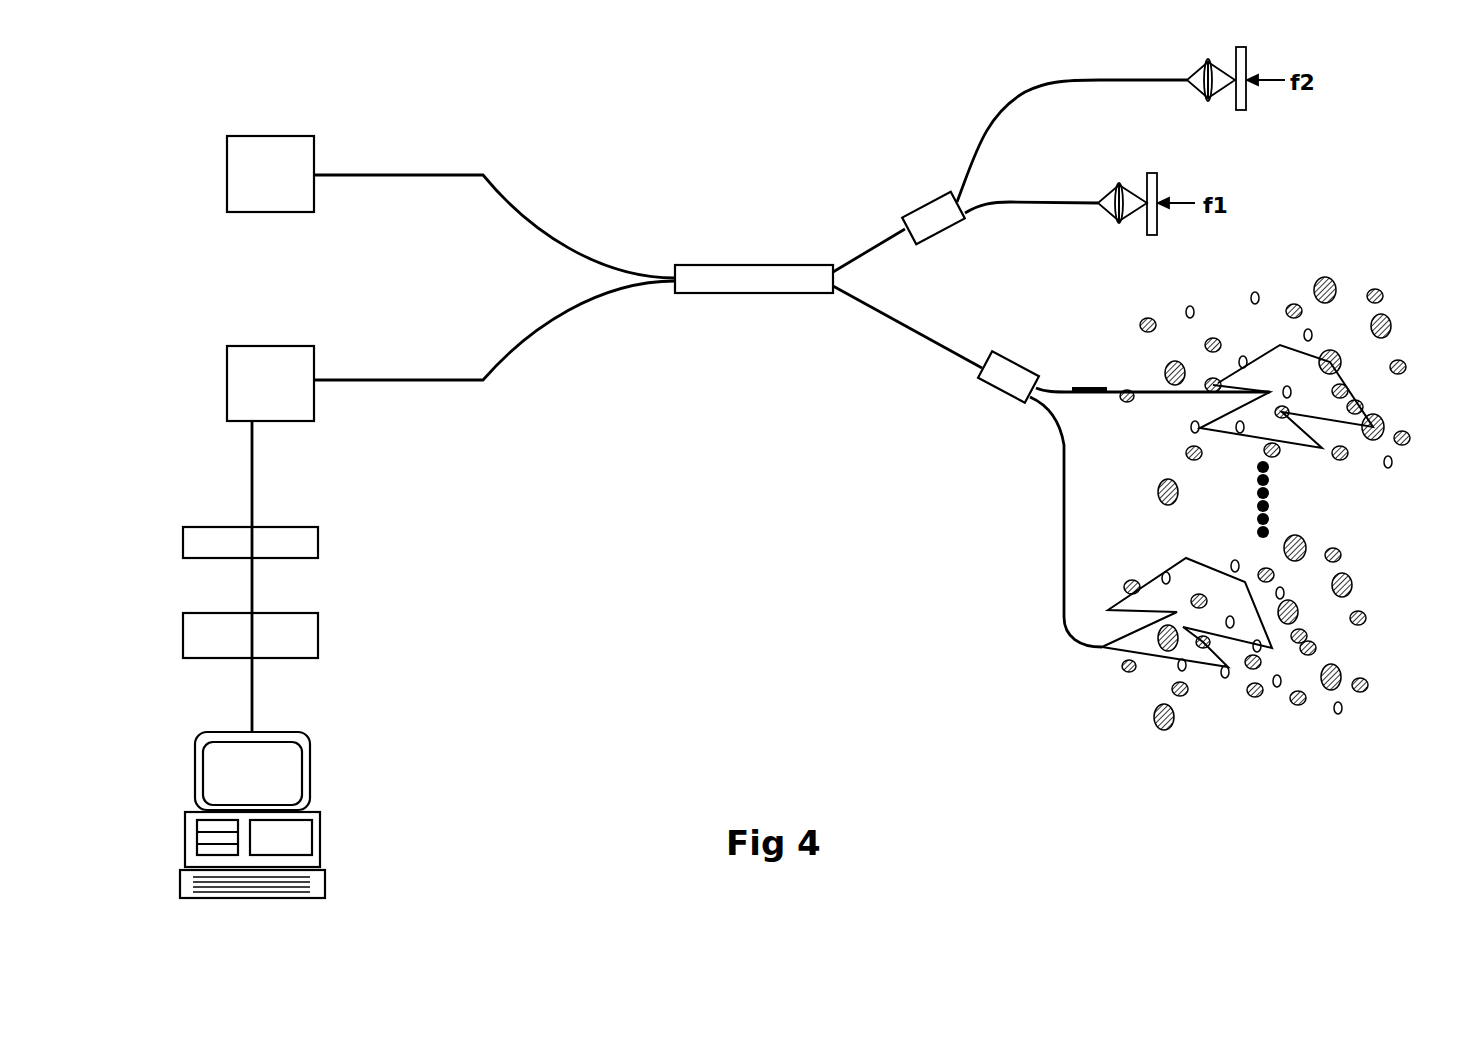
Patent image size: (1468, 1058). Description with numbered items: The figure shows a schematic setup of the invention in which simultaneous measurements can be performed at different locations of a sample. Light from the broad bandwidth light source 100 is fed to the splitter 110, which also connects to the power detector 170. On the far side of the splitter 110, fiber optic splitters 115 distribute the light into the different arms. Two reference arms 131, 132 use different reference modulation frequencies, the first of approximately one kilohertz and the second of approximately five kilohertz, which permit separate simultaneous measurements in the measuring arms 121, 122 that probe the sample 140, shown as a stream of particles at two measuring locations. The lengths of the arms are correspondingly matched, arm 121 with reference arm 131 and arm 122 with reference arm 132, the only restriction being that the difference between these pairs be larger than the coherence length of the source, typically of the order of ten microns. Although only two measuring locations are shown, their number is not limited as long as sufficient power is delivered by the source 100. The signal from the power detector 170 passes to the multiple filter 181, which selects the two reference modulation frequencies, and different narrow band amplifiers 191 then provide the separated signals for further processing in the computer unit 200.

The broad bandwidth light source 100 is at (314, 136).
The power detector 170 is at (314, 346).
The splitter 110 is at (748, 263).
The fiber optic splitters 115 is at (903, 212).
The reference arm 131 is at (1080, 64).
The reference arm 132 is at (1015, 197).
The arm 121 is at (1048, 385).
The arm 122 is at (1098, 535).
The sample 140 is at (1395, 344).
The multiple filter 181 is at (320, 527).
The narrow band amplifiers 191 is at (320, 617).
The computer unit 200 is at (310, 752).